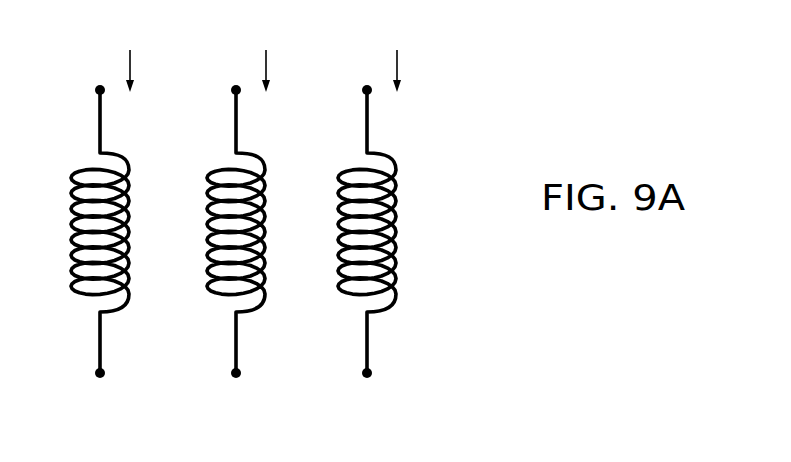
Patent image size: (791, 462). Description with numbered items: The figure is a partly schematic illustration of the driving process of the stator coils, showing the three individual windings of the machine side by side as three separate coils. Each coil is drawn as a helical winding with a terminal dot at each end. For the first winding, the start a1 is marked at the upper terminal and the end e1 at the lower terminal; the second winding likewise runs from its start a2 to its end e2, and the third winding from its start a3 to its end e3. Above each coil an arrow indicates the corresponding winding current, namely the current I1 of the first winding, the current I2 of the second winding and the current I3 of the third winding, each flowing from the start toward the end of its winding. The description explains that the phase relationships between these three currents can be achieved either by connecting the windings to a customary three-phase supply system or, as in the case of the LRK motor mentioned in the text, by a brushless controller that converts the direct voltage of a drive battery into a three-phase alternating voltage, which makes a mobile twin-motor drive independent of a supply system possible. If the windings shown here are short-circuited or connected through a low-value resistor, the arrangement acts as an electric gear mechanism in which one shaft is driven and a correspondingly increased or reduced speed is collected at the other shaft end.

The start of the first winding a1 is at (79, 101).
The end of the first winding e1 is at (107, 394).
The current of the first winding I1 is at (114, 65).
The start of the second winding a2 is at (215, 101).
The end of the second winding e2 is at (243, 394).
The current of the second winding I2 is at (250, 65).
The start of the third winding a3 is at (346, 101).
The end of the third winding e3 is at (374, 394).
The current of the third winding I3 is at (381, 65).